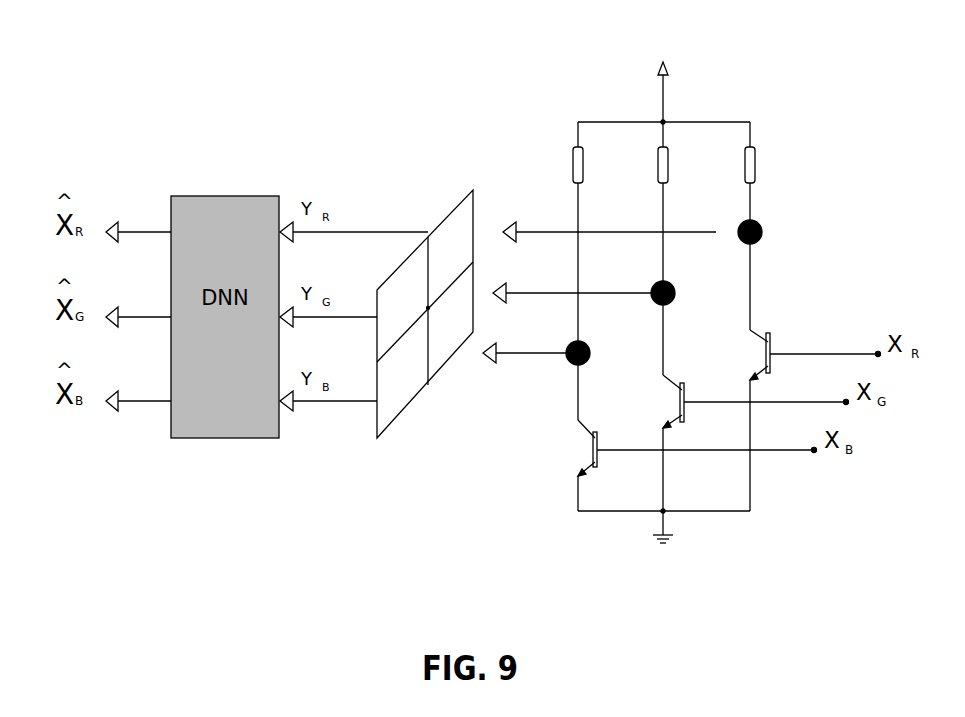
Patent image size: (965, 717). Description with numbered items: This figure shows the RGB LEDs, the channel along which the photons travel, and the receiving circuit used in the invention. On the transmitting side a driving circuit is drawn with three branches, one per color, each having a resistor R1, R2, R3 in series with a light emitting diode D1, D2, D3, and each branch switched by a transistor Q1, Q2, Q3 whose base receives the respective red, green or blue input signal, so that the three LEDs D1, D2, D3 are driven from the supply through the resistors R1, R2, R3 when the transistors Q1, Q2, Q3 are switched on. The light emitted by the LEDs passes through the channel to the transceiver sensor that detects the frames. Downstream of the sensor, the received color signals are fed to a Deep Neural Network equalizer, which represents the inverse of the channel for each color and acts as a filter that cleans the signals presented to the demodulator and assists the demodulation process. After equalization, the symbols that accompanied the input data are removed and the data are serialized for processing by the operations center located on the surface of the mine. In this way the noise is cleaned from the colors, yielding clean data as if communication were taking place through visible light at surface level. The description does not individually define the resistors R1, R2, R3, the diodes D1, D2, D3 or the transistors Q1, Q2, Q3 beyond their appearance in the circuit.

The resistor R1 is at (589, 231).
The resistor R2 is at (674, 201).
The resistor R3 is at (760, 171).
The blue LED D1 is at (596, 353).
The red LED D2 is at (766, 232).
The green LED D3 is at (684, 293).
The transistor Q1 is at (696, 438).
The transistor Q2 is at (754, 408).
The transistor Q3 is at (814, 377).